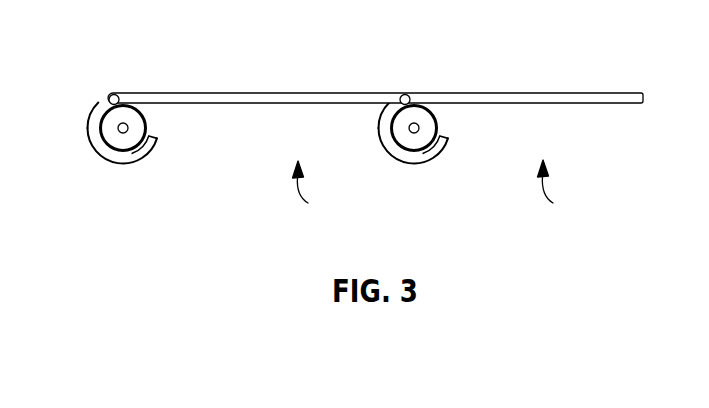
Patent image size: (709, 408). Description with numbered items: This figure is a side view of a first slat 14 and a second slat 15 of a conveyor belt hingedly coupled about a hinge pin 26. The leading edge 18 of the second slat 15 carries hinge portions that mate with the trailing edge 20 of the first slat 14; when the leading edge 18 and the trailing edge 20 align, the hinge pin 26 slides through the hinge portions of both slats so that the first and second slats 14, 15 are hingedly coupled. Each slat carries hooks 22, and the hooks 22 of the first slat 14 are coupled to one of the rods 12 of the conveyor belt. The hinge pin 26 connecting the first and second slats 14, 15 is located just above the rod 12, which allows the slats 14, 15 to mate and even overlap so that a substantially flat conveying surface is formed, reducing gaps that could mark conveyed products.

The rod 12 is at (137, 124).
The first slat 14 is at (308, 197).
The second slat 15 is at (552, 196).
The leading edge 18 is at (105, 97).
The trailing edge 20 is at (402, 93).
The hook 22 is at (120, 163).
The hinge pin 26 is at (413, 98).